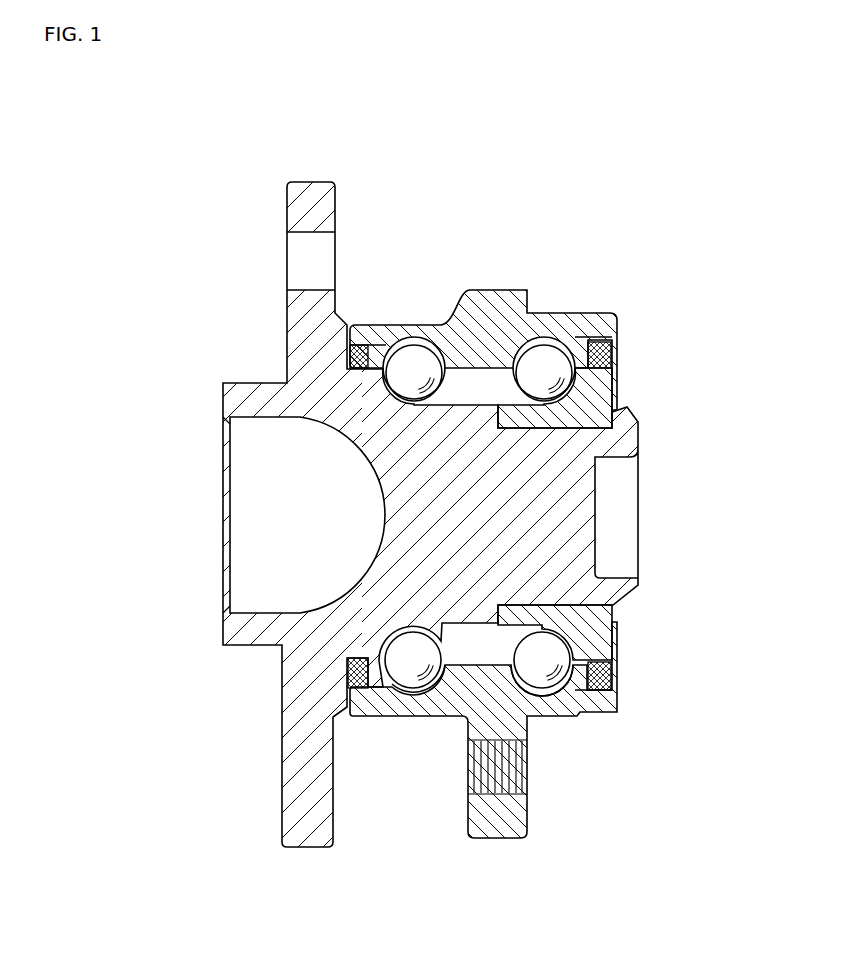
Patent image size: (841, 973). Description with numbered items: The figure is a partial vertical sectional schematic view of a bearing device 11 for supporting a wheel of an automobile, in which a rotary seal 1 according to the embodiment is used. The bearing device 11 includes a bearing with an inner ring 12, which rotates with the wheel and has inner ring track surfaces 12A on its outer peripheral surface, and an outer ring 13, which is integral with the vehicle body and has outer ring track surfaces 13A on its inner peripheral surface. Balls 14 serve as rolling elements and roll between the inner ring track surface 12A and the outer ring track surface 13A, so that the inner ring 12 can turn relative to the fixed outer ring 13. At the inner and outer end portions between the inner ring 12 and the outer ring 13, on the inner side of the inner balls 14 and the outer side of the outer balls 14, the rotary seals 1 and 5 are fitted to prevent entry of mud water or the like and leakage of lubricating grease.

The rotary seal 1 is at (618, 351).
The rotary seal 5 is at (373, 356).
The bearing device 11 is at (467, 260).
The inner ring 12 is at (572, 519).
The inner ring track surface 12A is at (617, 381).
The outer ring 13 is at (500, 297).
The outer ring track surface 13A is at (401, 345).
The balls 14 is at (525, 672).